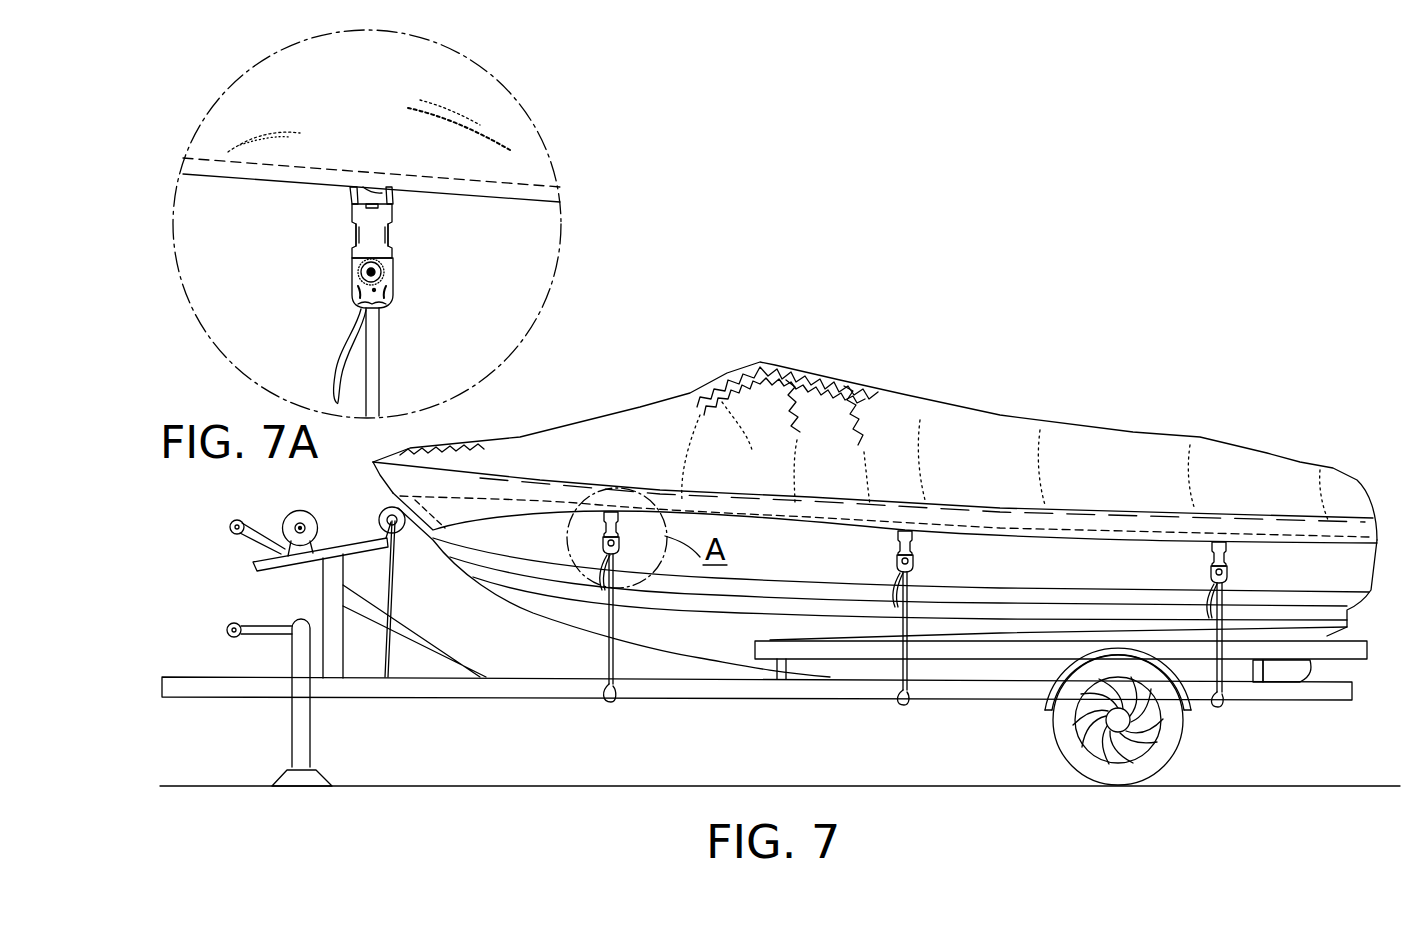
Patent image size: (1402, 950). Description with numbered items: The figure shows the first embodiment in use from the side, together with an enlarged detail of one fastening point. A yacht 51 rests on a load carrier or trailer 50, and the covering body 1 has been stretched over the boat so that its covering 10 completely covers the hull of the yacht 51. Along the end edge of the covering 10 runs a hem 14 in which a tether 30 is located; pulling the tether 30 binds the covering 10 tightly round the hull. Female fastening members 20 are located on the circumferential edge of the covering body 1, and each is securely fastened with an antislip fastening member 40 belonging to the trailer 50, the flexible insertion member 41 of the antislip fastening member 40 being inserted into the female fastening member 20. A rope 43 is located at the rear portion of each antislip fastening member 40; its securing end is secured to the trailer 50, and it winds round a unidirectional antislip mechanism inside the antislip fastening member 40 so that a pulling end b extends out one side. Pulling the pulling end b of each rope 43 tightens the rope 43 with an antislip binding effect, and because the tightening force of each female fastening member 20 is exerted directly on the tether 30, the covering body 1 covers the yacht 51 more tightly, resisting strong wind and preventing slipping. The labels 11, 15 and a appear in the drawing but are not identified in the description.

In FIG. 7, the covering body 1 is at (1160, 408).
In FIG. 7A, the covering 10 is at (522, 150).
In FIG. 7, the covering 10 is at (948, 414).
In FIG. 7, the boat hull 11 is at (413, 533).
In FIG. 7A, the hem 14 is at (522, 197).
In FIG. 7A, the hem edge of cover 15 is at (393, 200).
In FIG. 7A, the female fastening member 20 is at (379, 236).
In FIG. 7, the female fastening member 20 is at (914, 545).
In FIG. 7A, the tether 30 is at (350, 200).
In FIG. 7A, the antislip fastening member 40 is at (393, 285).
In FIG. 7, the antislip fastening member 40 is at (897, 561).
In FIG. 7A, the flexible insertion member 41 is at (393, 233).
In FIG. 7A, the rope 43 is at (380, 345).
In FIG. 7, the rope 43 is at (914, 690).
In FIG. 7, the load carrier (trailer) 50 is at (764, 646).
In FIG. 7, the yacht 51 is at (688, 633).
In FIG. 7A, the strap end a is at (380, 395).
In FIG. 7A, the pulling end b is at (333, 380).